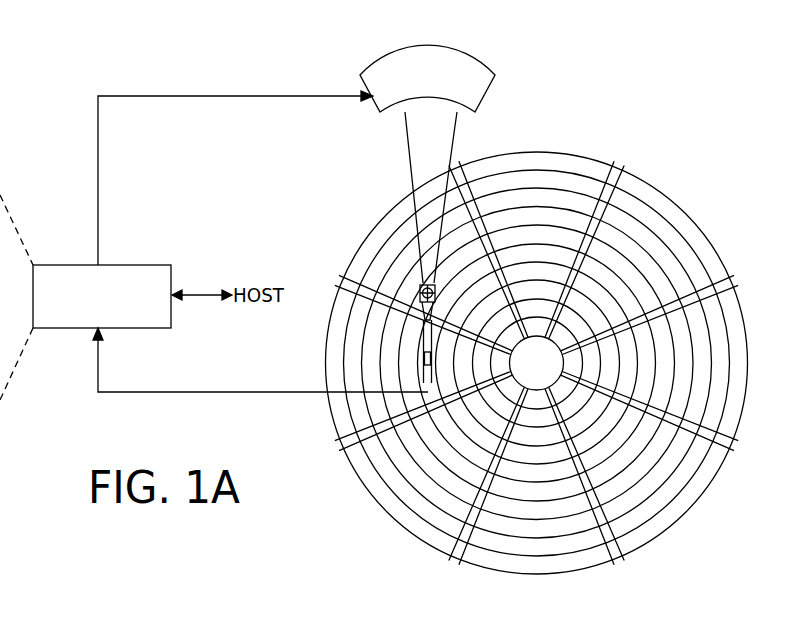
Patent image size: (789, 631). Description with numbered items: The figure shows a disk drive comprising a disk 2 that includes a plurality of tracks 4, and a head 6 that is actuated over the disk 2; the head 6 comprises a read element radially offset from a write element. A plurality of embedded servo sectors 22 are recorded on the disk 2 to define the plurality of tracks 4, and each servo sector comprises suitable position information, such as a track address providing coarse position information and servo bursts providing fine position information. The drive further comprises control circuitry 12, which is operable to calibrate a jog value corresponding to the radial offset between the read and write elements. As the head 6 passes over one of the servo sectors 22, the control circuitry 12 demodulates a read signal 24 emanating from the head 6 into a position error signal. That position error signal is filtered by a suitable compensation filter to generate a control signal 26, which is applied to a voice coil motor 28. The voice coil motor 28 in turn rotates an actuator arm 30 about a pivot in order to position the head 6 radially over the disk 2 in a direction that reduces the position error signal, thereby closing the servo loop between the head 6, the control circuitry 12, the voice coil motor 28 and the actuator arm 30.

The disk 2 is at (678, 201).
The tracks 4 is at (537, 182).
The head 6 is at (421, 362).
The control circuitry 12 is at (137, 263).
The embedded servo sectors 22 is at (542, 363).
The read signal 24 is at (229, 392).
The control signal 26 is at (98, 168).
The voice coil motor 28 is at (381, 104).
The actuator arm 30 is at (412, 180).